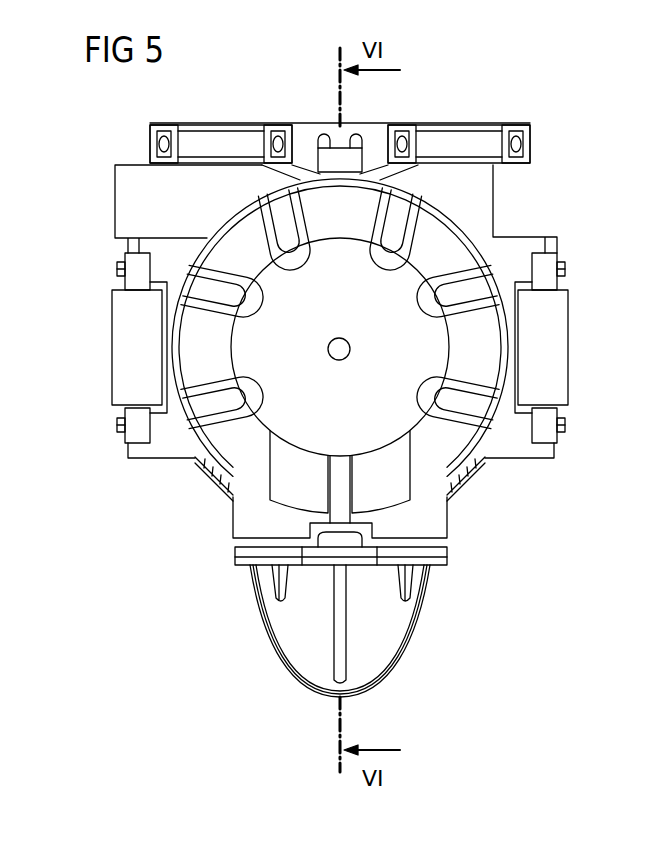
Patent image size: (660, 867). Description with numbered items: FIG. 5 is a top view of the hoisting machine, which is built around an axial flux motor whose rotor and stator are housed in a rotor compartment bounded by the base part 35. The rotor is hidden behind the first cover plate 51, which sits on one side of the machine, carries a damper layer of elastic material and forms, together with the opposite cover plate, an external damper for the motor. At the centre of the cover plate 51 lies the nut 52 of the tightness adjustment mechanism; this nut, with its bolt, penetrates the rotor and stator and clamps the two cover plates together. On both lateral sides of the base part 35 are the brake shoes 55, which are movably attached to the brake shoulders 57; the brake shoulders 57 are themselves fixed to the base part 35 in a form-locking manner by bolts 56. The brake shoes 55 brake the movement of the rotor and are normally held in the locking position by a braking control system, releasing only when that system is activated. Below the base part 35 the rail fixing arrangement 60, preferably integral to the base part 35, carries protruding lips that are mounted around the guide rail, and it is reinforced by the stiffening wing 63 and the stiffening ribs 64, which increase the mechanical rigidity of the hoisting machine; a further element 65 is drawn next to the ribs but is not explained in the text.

The base part 35 is at (440, 522).
The first cover plate 51 is at (418, 405).
The nut 52 is at (351, 349).
The brake shoes 55 is at (130, 350).
The bolts 56 is at (117, 268).
The brake shoulders 57 is at (138, 262).
The rail fixing arrangement 60 is at (333, 655).
The stiffening wing 63 is at (380, 636).
The stiffening ribs 64 is at (408, 584).
The stop finger 65 is at (270, 582).